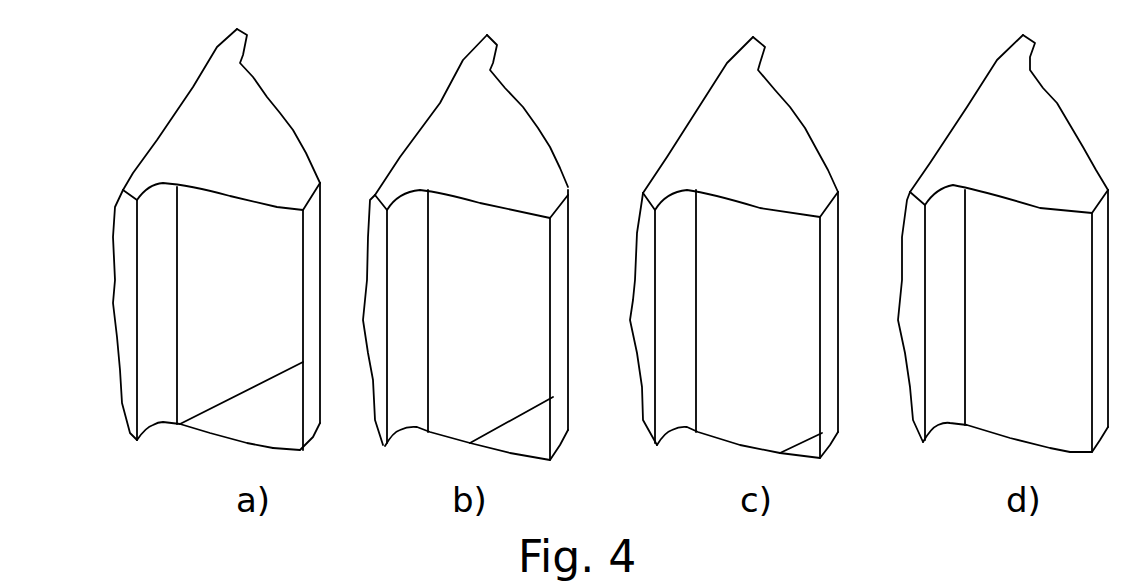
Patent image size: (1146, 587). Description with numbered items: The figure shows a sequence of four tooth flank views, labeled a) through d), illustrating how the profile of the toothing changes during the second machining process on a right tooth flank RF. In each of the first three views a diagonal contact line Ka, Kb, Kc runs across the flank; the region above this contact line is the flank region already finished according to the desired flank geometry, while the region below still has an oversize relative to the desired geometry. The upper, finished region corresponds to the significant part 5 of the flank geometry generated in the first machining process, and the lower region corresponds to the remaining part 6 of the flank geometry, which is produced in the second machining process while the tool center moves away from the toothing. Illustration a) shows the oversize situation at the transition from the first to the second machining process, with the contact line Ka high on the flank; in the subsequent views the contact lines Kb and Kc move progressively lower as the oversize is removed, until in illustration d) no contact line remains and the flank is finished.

The significant part of the flank geometry 5 is at (216, 238).
The remaining part of the flank geometry 6 is at (263, 413).
The right tooth flank RF is at (277, 233).
The contact line Ka is at (247, 369).
The contact line Kb is at (507, 402).
The contact line Kc is at (785, 430).